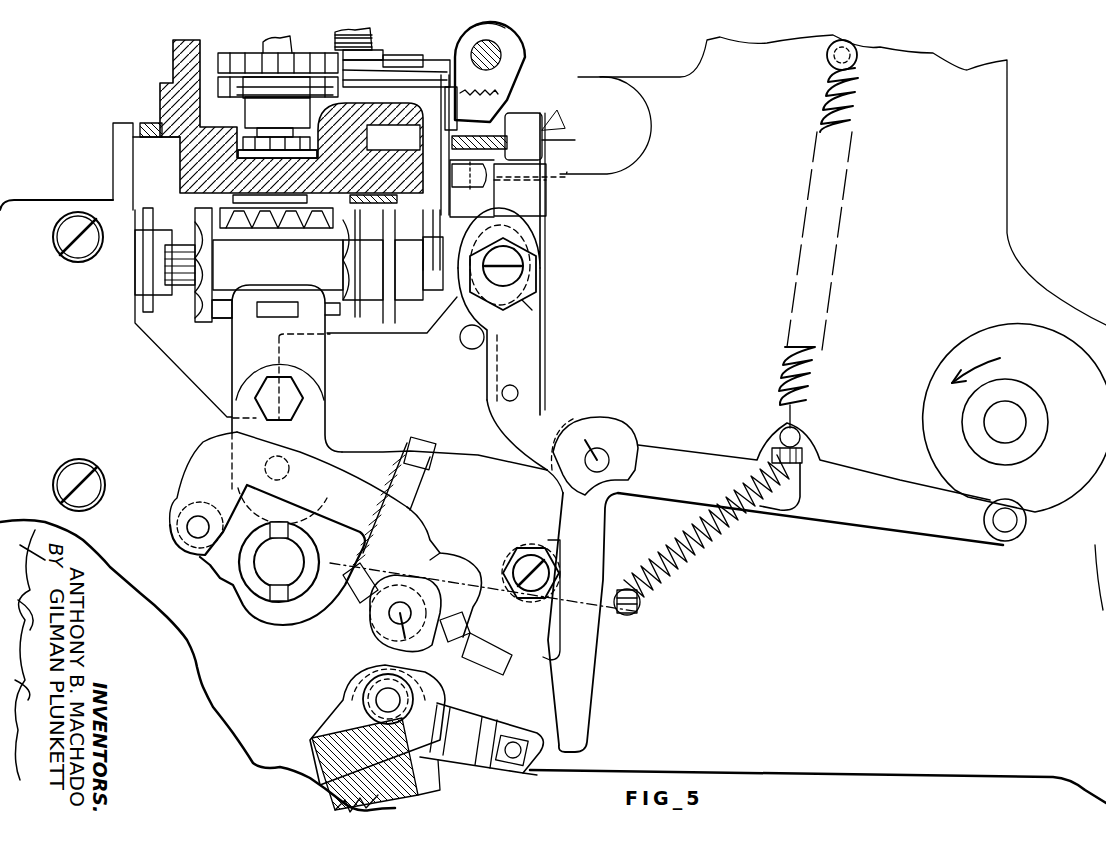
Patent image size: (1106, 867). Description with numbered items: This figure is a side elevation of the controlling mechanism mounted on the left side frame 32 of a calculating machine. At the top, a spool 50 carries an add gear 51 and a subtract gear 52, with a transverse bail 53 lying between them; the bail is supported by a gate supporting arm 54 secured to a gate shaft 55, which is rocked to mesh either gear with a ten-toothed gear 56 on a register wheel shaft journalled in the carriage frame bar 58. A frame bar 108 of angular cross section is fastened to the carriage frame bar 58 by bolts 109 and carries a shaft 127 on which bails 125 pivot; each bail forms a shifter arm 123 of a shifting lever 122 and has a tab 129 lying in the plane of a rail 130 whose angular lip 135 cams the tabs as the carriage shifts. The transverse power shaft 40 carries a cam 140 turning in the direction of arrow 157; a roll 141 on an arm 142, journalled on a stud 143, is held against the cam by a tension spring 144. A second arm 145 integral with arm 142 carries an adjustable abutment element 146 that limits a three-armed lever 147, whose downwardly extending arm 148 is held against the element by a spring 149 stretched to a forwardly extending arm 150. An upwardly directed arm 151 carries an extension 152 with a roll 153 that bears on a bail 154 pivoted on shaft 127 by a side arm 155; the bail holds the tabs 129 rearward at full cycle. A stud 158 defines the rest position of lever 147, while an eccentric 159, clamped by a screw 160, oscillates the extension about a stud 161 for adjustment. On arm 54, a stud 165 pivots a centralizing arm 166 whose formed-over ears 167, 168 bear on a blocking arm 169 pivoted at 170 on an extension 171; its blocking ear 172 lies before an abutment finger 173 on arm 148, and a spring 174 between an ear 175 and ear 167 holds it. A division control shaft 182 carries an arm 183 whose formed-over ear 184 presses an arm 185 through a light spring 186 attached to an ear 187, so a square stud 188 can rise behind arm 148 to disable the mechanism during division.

The left side frame 32 is at (1003, 230).
The transverse power shaft 40 is at (1003, 424).
The spool 50 is at (328, 274).
The add gear 51 is at (393, 266).
The subtract gear 52 is at (200, 291).
The transverse bail 53 is at (225, 310).
The gate supporting arm 54 is at (322, 410).
The gate shaft 55 is at (278, 565).
The ten-toothed gear 56 is at (255, 228).
The carriage frame bar 58 is at (165, 71).
The frame bar 108 is at (428, 142).
The bolts 109 is at (448, 226).
The shifting lever 122 is at (510, 85).
The shifter arm 123 is at (432, 78).
The bail 125 is at (503, 102).
The shaft 127 is at (503, 55).
The tab 129 is at (452, 198).
The rail 130 is at (490, 195).
The angular lip 135 is at (542, 186).
The cam 140 is at (1068, 318).
The roll 141 is at (1003, 535).
The arm 142 is at (878, 520).
The stud 143 is at (604, 447).
The tension spring 144 is at (815, 378).
The second arm 145 is at (615, 615).
The adjustable abutment element 146 is at (540, 548).
The three-armed lever 147 is at (539, 481).
The downwardly extending arm 148 is at (583, 690).
The spring 149 is at (702, 535).
The forwardly extending arm 150 is at (728, 440).
The upwardly directed arm 151 is at (533, 350).
The extension 152 is at (540, 222).
The roll 153 is at (558, 135).
The bail 154 is at (479, 106).
The side arm 155 is at (508, 31).
The arrow 157 is at (998, 357).
The stud 158 is at (468, 343).
The eccentric 159 is at (530, 316).
The screw 160 is at (522, 262).
The stud 161 is at (520, 392).
The stud 165 is at (190, 527).
The centralizing arm 166 is at (222, 452).
The formed-over ear 167 is at (360, 600).
The formed-over ear 168 is at (452, 635).
The blocking arm 169 is at (487, 575).
The pivot 170 is at (405, 650).
The extension 171 is at (388, 630).
The blocking ear 172 is at (487, 660).
The abutment finger 173 is at (530, 660).
The spring 174 is at (378, 460).
The ear 175 is at (437, 445).
The division control shaft 182 is at (385, 700).
The arm 183 is at (368, 680).
The formed-over ear 184 is at (312, 735).
The arm 185 is at (452, 765).
The light spring 186 is at (332, 792).
The ear 187 is at (428, 785).
The square stud 188 is at (527, 778).